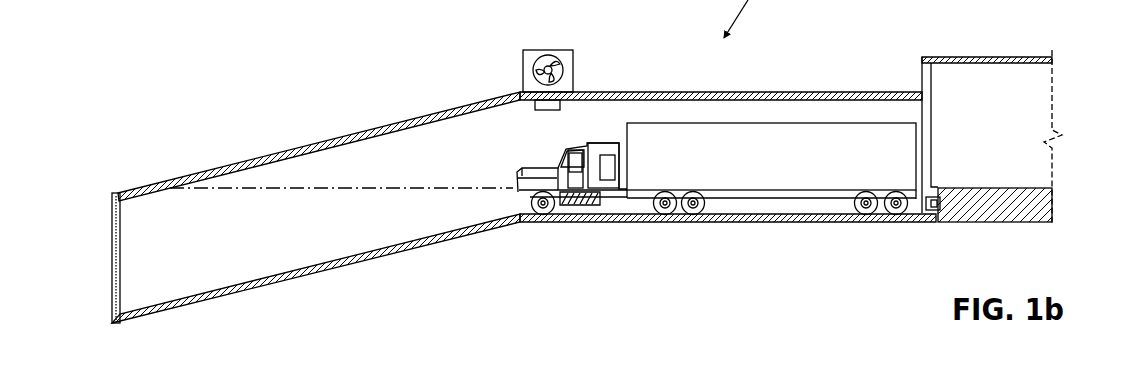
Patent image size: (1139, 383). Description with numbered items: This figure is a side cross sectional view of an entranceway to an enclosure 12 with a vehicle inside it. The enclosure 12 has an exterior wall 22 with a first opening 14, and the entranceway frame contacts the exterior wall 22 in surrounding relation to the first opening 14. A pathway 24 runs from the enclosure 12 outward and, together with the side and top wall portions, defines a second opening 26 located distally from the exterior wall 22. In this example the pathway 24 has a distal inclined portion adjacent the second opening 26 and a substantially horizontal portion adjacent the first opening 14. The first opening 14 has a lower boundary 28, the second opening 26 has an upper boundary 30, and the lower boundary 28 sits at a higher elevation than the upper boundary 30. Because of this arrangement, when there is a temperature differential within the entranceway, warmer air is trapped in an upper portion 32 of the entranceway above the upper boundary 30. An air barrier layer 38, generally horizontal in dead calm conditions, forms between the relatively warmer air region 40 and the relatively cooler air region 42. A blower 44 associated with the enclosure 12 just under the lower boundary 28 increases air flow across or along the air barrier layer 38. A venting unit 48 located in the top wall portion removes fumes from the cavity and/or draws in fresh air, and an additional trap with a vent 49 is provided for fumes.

The enclosure 12 is at (1037, 36).
The first opening 14 is at (950, 128).
The exterior wall 22 is at (921, 78).
The inclined pathway 24 is at (437, 242).
The second opening 26 is at (96, 266).
The lower boundary 28 is at (941, 182).
The upper boundary 30 is at (96, 197).
The upper portion 32 is at (812, 110).
The air barrier layer 38 is at (367, 187).
The relatively warmer air region 40 is at (566, 116).
The relatively cooler air region 42 is at (341, 223).
The blower 44 is at (936, 211).
The venting unit 48 is at (570, 65).
The trap with a vent 49 is at (608, 93).